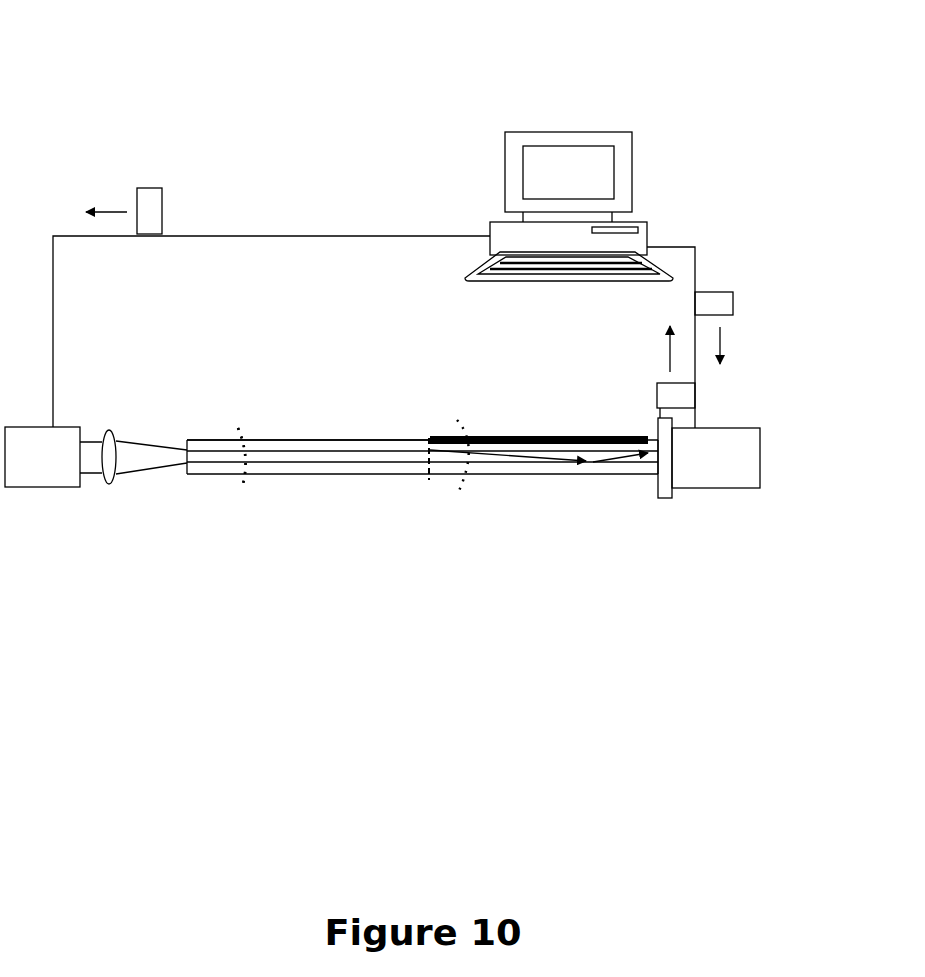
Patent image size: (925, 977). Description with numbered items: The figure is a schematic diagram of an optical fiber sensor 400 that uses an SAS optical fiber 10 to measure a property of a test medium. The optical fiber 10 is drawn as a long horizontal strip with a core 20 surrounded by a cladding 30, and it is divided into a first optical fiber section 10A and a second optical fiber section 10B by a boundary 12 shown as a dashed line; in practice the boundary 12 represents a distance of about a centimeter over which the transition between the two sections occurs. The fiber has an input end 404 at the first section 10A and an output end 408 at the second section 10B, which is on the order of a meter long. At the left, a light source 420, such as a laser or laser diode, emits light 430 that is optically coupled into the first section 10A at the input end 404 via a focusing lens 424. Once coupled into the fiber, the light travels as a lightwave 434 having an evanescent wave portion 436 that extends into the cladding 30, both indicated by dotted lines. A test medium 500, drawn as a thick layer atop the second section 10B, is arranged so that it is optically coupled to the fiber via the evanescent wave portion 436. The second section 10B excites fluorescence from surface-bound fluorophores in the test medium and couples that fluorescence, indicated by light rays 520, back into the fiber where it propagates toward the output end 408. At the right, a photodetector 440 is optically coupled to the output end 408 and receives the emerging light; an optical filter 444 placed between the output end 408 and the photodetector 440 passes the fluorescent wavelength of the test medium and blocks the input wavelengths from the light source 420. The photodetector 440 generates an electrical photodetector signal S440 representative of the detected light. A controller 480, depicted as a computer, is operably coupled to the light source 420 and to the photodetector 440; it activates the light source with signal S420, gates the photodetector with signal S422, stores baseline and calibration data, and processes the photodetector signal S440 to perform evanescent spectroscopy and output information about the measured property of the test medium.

The optical fiber sensor 400 is at (192, 69).
The light source signal S420 is at (150, 188).
The detector output signal S422 is at (733, 303).
The photodetector signal S440 is at (657, 393).
The controller 480 is at (603, 192).
The light source 420 is at (72, 475).
The focusing lens 424 is at (111, 488).
The light 430 is at (150, 462).
The SAS optical fiber 10 is at (461, 482).
The first optical fiber section 10A is at (307, 482).
The second optical fiber section 10B is at (517, 482).
The cladding 30 is at (283, 438).
The core 20 is at (370, 463).
The boundary 12 is at (430, 433).
The input end 404 is at (186, 440).
The output end 408 is at (646, 492).
The lightwave 434 is at (252, 470).
The evanescent wave portion 436 is at (456, 418).
The test medium 500 is at (473, 436).
The light rays (fluorescence) 520 is at (539, 405).
The optical filter 444 is at (660, 500).
The photodetector 440 is at (685, 479).